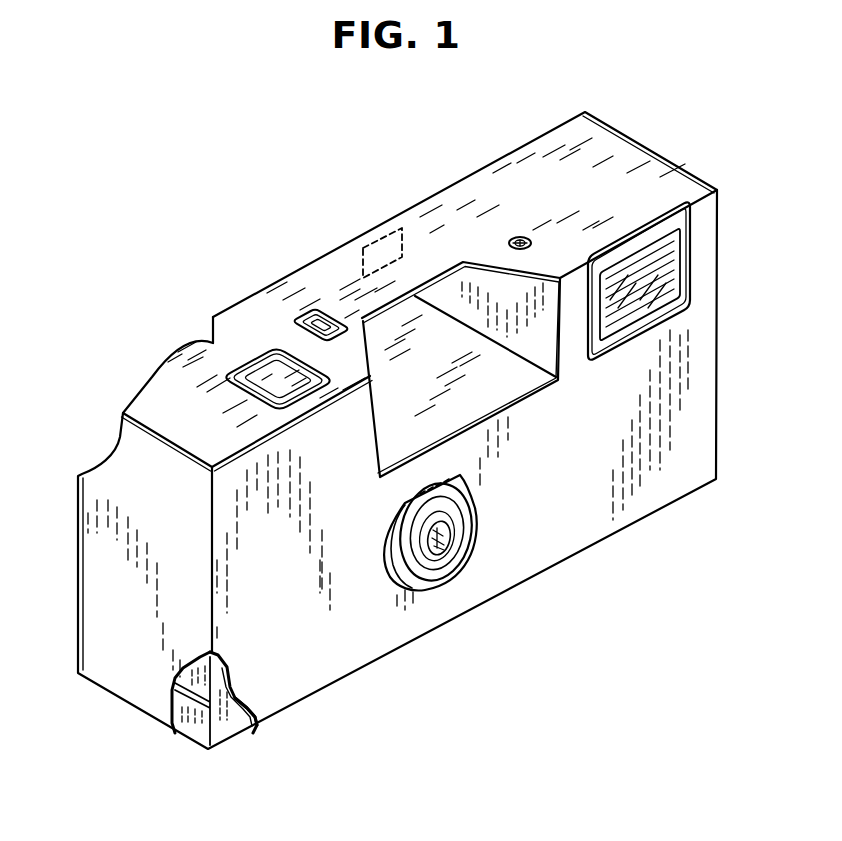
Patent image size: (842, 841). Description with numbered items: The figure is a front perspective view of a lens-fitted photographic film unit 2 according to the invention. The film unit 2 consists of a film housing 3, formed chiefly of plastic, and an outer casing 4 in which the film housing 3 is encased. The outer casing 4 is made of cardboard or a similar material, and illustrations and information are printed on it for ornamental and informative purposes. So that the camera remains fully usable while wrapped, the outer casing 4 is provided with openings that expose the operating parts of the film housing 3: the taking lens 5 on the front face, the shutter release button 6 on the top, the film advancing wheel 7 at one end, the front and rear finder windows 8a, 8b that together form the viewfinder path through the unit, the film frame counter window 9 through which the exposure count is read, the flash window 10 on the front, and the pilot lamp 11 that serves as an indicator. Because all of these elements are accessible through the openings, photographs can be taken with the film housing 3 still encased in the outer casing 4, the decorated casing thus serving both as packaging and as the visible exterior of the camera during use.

The lens-fitted photographic film unit 2 is at (622, 537).
The film housing 3 is at (223, 742).
The outer casing 4 is at (256, 708).
The taking lens 5 is at (447, 552).
The shutter release button 6 is at (272, 375).
The film advancing wheel 7 is at (170, 345).
The front finder window 8a is at (498, 393).
The rear finder window 8b is at (384, 232).
The film frame counter window 9 is at (325, 330).
The flash window 10 is at (668, 270).
The pilot lamp 11 is at (522, 237).